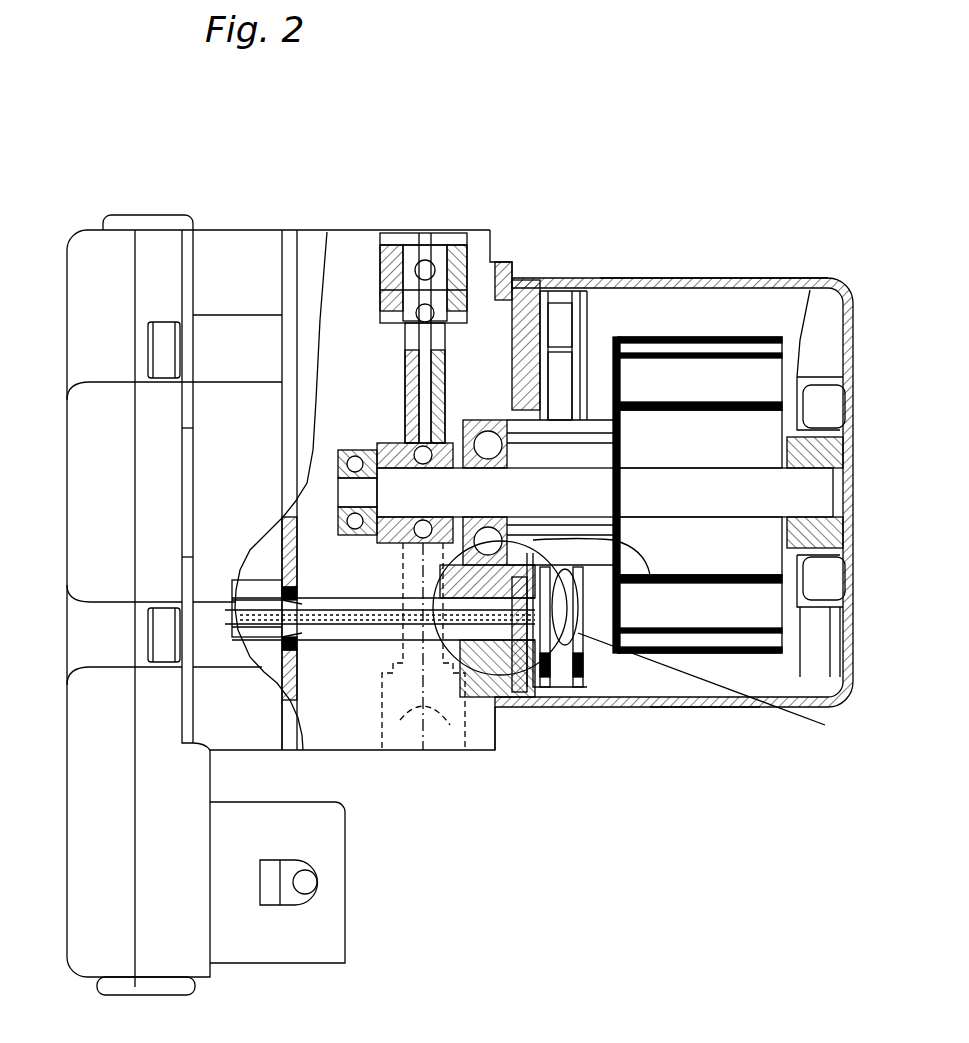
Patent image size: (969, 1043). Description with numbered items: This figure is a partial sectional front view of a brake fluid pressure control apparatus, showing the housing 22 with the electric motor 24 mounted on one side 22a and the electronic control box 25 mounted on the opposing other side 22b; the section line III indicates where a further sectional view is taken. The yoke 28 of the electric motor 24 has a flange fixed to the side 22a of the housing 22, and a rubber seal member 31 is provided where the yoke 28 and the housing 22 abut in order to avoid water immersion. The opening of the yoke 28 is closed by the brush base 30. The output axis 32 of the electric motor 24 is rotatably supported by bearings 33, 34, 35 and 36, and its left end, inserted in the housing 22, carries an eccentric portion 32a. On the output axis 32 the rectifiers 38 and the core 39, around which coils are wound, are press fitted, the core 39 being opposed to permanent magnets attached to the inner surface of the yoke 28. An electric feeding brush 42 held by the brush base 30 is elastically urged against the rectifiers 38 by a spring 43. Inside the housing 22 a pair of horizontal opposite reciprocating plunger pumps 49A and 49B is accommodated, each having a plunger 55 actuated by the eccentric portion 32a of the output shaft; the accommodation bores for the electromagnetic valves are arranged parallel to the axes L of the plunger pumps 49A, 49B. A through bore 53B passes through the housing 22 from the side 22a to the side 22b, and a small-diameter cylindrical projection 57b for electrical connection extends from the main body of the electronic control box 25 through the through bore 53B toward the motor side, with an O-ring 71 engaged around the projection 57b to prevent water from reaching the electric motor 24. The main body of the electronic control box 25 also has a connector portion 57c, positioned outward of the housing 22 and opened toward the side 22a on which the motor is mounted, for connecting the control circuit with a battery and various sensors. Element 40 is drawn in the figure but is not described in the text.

The housing 22 is at (482, 752).
The one side 22a is at (505, 733).
The other side 22b is at (292, 735).
The electric motor 24 is at (680, 708).
The electronic control box 25 is at (107, 248).
The yoke 28 is at (697, 277).
The brush base 30 is at (527, 285).
The rubber seal member 31 is at (505, 275).
The output axis 32 is at (732, 488).
The eccentric portion 32a is at (453, 440).
The bearing 33 is at (810, 300).
The bearing 34 is at (537, 292).
The bearing 35 is at (400, 443).
The bearing 36 is at (345, 452).
The rectifiers 38 is at (650, 575).
The core 39 is at (745, 383).
The yoke bottom wall 40 is at (703, 703).
The electric feeding brush 42 is at (558, 373).
The springs 43 is at (583, 347).
The plunger pump 49A is at (425, 240).
The plunger pump 49B is at (405, 718).
The through bore 53B is at (217, 597).
The plunger 55 is at (390, 245).
The projection for electrical connection 57b is at (337, 628).
The connector portion 57c is at (323, 955).
The O-rings 71 is at (280, 650).
The axes of the plunger pumps L is at (450, 745).
The section line III- III is at (714, 694).